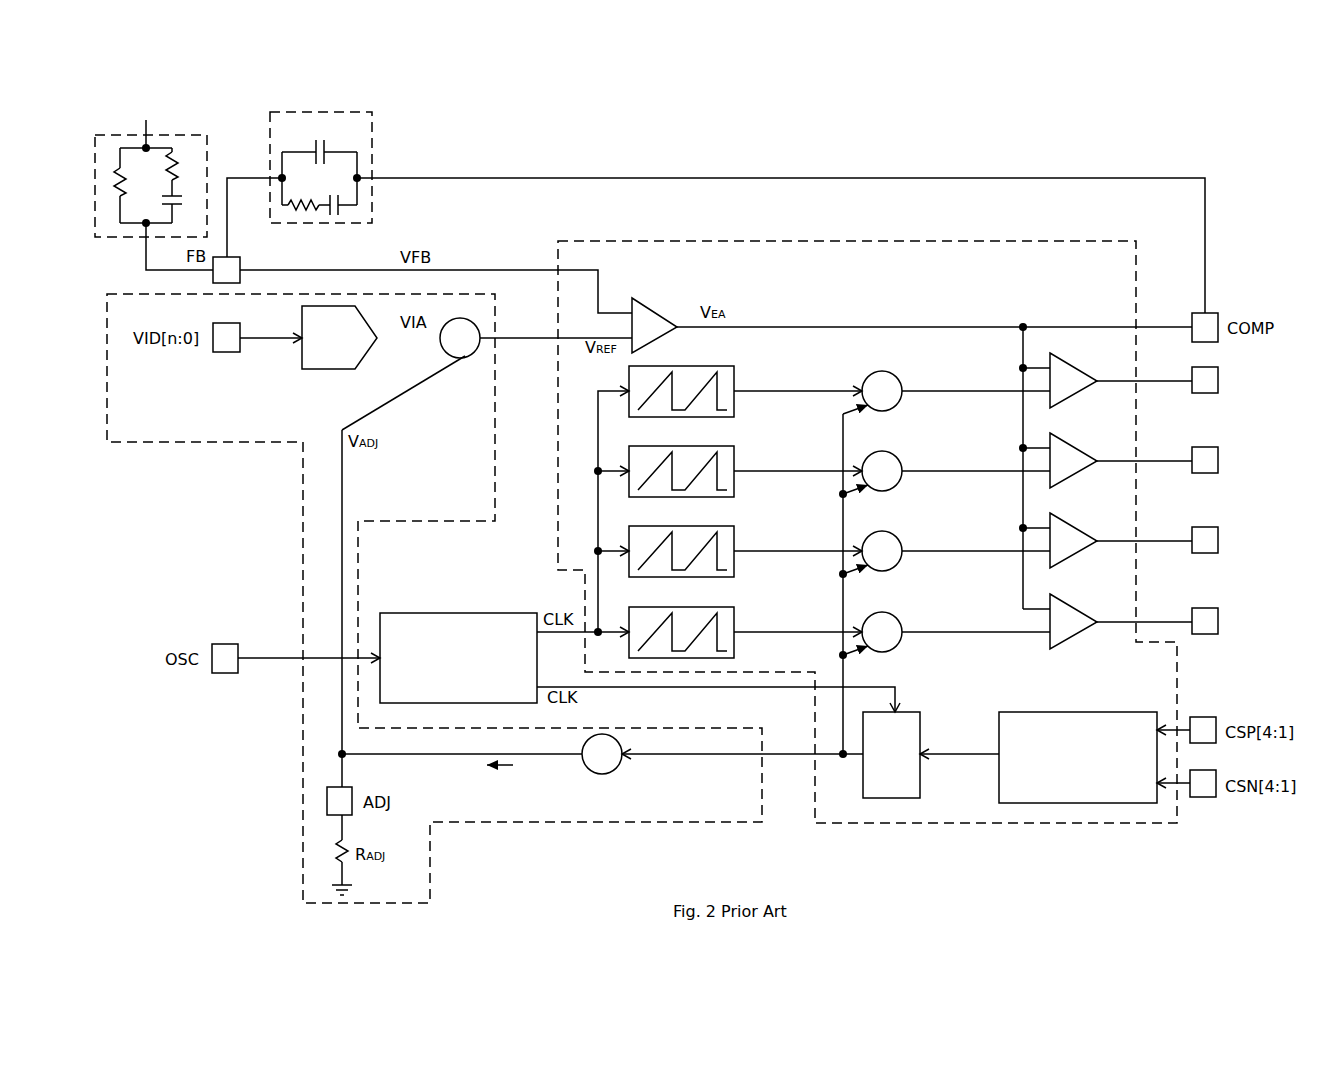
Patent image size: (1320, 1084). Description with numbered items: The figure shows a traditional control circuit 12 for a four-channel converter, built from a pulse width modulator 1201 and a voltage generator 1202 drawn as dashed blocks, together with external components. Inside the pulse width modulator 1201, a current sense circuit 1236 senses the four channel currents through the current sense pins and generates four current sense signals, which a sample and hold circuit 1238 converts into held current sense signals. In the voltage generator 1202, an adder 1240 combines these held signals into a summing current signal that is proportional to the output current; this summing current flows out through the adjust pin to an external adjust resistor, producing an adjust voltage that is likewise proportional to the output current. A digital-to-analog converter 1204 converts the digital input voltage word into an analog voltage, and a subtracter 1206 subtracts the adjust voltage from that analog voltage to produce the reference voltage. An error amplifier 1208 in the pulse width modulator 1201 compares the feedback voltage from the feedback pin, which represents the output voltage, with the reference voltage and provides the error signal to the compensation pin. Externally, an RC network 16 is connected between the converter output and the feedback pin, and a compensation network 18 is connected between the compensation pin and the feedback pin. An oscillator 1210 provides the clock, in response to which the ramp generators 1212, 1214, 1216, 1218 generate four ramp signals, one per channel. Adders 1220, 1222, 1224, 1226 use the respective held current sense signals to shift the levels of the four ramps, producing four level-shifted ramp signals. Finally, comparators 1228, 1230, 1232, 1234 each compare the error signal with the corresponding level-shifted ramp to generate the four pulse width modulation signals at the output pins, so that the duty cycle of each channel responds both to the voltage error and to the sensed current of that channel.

The control circuit 12 is at (1273, 263).
The RC network 16 is at (118, 240).
The compensation network 18 is at (372, 141).
The pulse width modulator 1201 is at (848, 241).
The voltage generator 1202 is at (207, 444).
The digital-to-analog converter 1204 is at (312, 370).
The subtracter 1206 is at (470, 358).
The error amplifier 1208 is at (655, 300).
The oscillator 1210 is at (455, 612).
The ramp generator 1212 is at (683, 365).
The ramp generator 1214 is at (683, 445).
The ramp generator 1216 is at (683, 525).
The ramp generator 1218 is at (683, 606).
The adder 1220 is at (887, 368).
The adder 1222 is at (887, 448).
The adder 1224 is at (887, 528).
The adder 1226 is at (887, 609).
The comparator 1228 is at (1073, 364).
The comparator 1230 is at (1073, 444).
The comparator 1232 is at (1073, 524).
The comparator 1234 is at (1073, 605).
The current sense circuit 1236 is at (1080, 712).
The sample and hold circuit 1238 is at (920, 712).
The adder 1240 is at (600, 774).